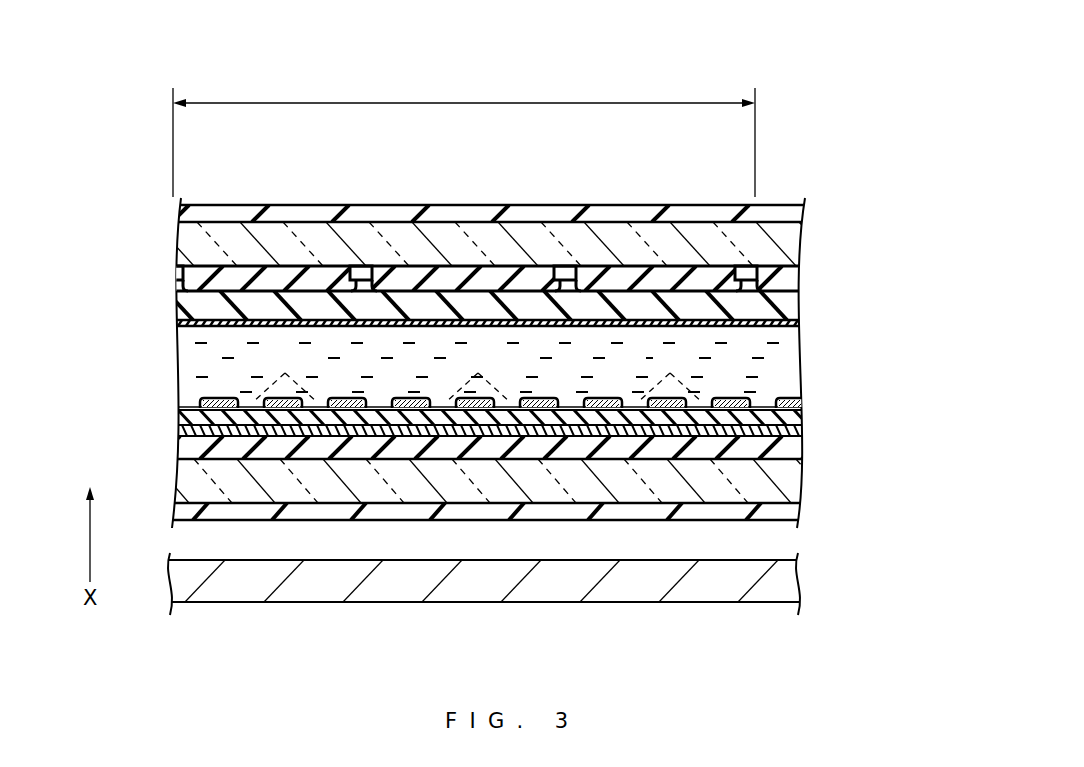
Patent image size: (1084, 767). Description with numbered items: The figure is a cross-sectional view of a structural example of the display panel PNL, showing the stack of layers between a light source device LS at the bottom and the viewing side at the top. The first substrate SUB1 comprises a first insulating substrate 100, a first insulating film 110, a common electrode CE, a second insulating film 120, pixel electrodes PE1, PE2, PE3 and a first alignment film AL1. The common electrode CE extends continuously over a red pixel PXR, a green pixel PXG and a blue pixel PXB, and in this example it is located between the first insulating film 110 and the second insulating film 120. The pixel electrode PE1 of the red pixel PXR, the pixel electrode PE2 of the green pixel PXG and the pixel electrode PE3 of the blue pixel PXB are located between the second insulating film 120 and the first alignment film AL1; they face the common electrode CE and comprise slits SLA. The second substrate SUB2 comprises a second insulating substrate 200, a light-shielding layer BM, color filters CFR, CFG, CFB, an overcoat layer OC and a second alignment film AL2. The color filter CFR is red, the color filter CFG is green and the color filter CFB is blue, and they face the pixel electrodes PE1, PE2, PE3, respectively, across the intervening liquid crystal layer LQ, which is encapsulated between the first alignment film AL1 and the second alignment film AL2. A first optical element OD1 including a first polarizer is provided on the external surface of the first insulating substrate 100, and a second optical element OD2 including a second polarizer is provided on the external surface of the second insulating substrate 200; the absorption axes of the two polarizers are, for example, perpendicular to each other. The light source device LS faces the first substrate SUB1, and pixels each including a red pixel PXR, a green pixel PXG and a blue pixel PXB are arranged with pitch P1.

The display panel PNL is at (694, 80).
The pitch P1 is at (464, 136).
The light-shielding layer BM is at (200, 267).
The color filter CFR is at (250, 283).
The red pixel PXR is at (313, 297).
The color filter CFG is at (447, 283).
The green pixel PXG is at (511, 297).
The color filter CFB is at (626, 283).
The blue pixel PXB is at (688, 297).
The second optical element OD2 is at (788, 213).
The second insulating substrate 200 is at (179, 243).
The second substrate SUB2 is at (805, 288).
The overcoat layer OC is at (175, 303).
The second alignment film AL2 is at (182, 325).
The liquid crystal layer LQ is at (790, 360).
The slits SLA is at (477, 374).
The first alignment film AL1 is at (186, 408).
The second insulating film 120 is at (186, 418).
The common electrode CE is at (187, 431).
The first insulating film 110 is at (188, 450).
The first insulating substrate 100 is at (189, 481).
The first substrate SUB1 is at (829, 478).
The pixel electrode PE1 is at (283, 409).
The pixel electrode PE2 is at (411, 409).
The pixel electrode PE3 is at (603, 409).
The first optical element OD1 is at (800, 513).
The light source device LS is at (803, 583).